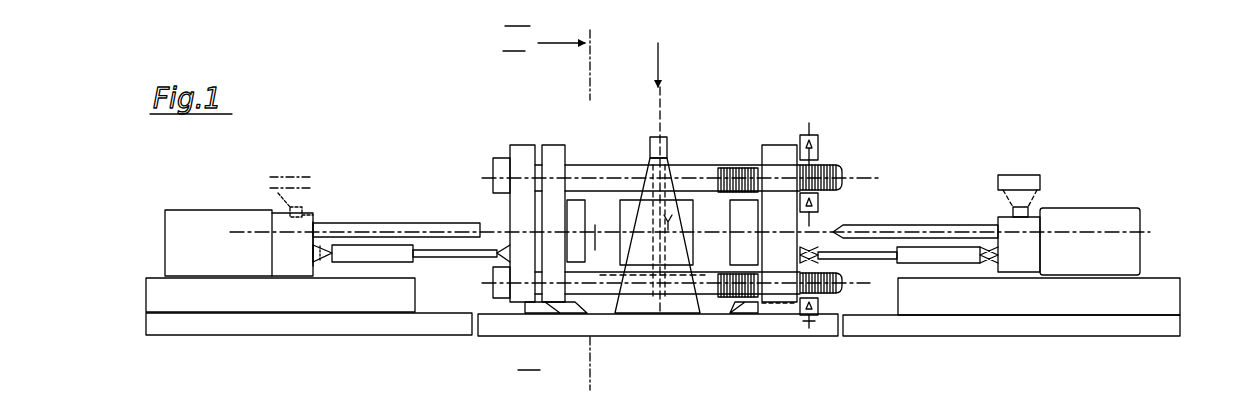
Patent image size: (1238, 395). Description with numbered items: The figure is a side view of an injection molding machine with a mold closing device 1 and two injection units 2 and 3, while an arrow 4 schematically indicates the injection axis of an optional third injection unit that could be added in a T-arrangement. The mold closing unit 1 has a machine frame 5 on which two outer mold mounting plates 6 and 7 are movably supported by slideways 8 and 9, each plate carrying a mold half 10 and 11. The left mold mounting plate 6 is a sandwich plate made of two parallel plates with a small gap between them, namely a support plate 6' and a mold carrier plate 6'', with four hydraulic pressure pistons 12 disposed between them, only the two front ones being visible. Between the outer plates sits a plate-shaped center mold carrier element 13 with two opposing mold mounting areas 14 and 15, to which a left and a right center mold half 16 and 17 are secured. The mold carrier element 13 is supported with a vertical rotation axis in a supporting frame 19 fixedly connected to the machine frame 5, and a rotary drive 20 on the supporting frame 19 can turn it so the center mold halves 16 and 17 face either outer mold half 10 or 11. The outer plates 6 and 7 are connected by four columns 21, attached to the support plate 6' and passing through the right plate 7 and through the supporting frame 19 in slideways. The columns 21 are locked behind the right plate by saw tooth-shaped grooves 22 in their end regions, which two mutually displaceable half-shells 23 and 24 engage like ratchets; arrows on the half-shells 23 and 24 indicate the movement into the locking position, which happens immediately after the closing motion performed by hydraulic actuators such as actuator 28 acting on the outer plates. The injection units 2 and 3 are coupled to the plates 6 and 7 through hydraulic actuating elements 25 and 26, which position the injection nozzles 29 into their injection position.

The mold closing device 1 is at (759, 92).
The injection unit 2 is at (346, 190).
The injection unit 3 is at (984, 177).
The arrow 4 is at (645, 56).
The machine frame 5 is at (758, 330).
The outer mold mounting plate 6 is at (529, 189).
The support plate 6' is at (522, 223).
The mold carrier plate 6'' is at (553, 223).
The outer mold mounting plate 7 is at (778, 145).
The slideway 8 is at (571, 305).
The slideway 9 is at (747, 304).
The mold half 10 is at (587, 214).
The mold half 11 is at (748, 248).
The hydraulic pressure piston 12 is at (543, 262).
The center mold carrier element 13 is at (687, 157).
The mold mounting area 14 is at (723, 157).
The mold mounting area 15 is at (623, 318).
The left center mold half 16 is at (626, 246).
The right center mold half 17 is at (688, 222).
The supporting frame 19 is at (702, 295).
The rotary drive 20 is at (664, 137).
The column 21 is at (632, 175).
The saw tooth-shaped grooves 22 is at (832, 166).
The half-shell 23 is at (816, 155).
The half-shell 24 is at (818, 199).
The hydraulic actuating element 25 is at (433, 260).
The hydraulic actuating element 26 is at (932, 255).
The hydraulic actuator 28 is at (836, 232).
The injection nozzle 29 is at (482, 232).